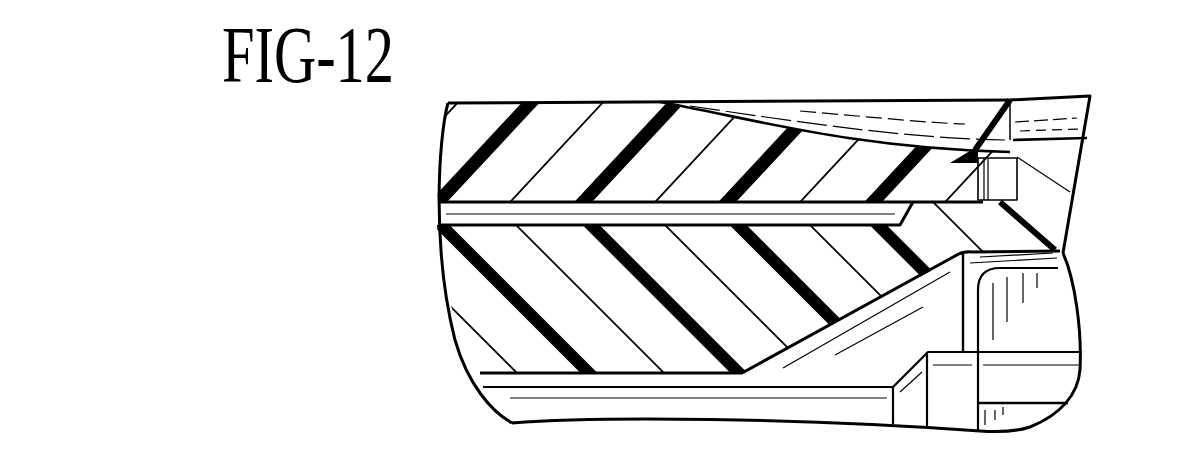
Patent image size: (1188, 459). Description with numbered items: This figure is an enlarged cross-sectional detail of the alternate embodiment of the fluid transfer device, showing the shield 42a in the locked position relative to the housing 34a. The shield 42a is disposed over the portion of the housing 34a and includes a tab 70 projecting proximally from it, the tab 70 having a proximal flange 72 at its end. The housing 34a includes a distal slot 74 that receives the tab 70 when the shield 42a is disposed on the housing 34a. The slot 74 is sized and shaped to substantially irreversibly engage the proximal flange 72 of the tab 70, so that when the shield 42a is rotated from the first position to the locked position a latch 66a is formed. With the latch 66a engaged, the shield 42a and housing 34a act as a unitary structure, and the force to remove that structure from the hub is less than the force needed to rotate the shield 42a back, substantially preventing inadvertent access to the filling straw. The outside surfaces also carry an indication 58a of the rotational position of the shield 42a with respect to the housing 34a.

The shield 42a is at (553, 103).
The indication 58a is at (840, 102).
The tab 70 is at (947, 177).
The latch 66a is at (1008, 170).
The housing 34a is at (1085, 97).
The distal slot 74 is at (1007, 177).
The proximal flange 72 is at (1040, 198).